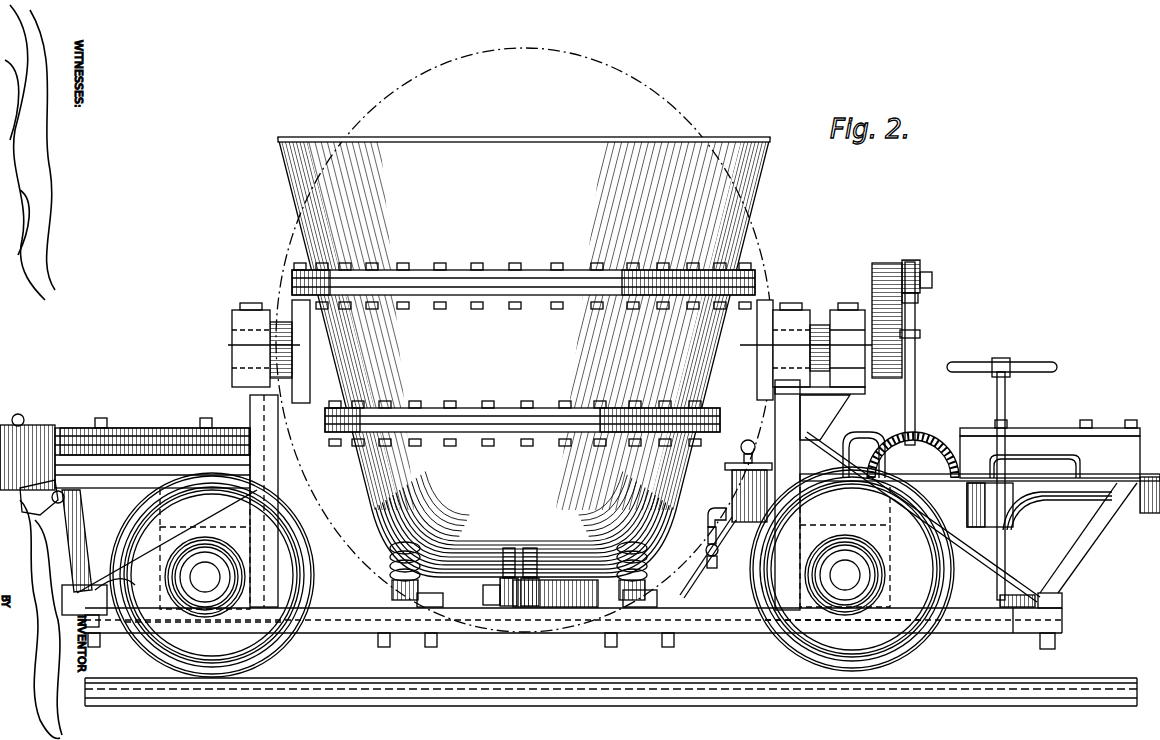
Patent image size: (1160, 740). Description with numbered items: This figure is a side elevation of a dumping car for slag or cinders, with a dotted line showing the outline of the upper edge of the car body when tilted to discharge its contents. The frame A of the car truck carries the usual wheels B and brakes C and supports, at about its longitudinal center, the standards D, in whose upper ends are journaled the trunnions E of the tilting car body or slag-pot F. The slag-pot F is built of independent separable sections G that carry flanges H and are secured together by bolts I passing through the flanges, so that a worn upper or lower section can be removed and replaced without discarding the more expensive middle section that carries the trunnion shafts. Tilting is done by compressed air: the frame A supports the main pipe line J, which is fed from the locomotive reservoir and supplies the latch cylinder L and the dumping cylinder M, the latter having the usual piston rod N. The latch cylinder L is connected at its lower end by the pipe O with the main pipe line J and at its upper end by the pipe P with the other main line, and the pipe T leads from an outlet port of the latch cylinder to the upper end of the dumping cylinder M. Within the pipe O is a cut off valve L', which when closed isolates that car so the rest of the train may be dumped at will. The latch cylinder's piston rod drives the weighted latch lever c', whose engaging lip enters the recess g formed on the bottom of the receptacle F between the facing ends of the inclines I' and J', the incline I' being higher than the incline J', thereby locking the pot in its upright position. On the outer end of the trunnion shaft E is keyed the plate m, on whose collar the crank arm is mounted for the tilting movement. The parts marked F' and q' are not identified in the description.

The frame A is at (580, 526).
The wheels B is at (532, 572).
The brakes C is at (138, 556).
The standards D is at (550, 495).
The trunnions E is at (232, 345).
The tilting car body or slag-pot F is at (524, 129).
The pinion F' is at (926, 276).
The separable sections G is at (524, 357).
The flanges H is at (470, 270).
The bolts I is at (522, 341).
The incline I' is at (500, 555).
The main pipe line J is at (1057, 511).
The incline J' is at (535, 554).
The latch cylinder L is at (726, 528).
The cut off valve L' is at (697, 547).
The dumping cylinder M is at (930, 440).
The piston rod N is at (918, 343).
The pipe O is at (708, 515).
The pipe P is at (747, 442).
The pipe T is at (950, 479).
The weighted latch lever c' is at (555, 588).
The recess g is at (500, 580).
The plate m is at (916, 322).
The gear q' is at (882, 320).